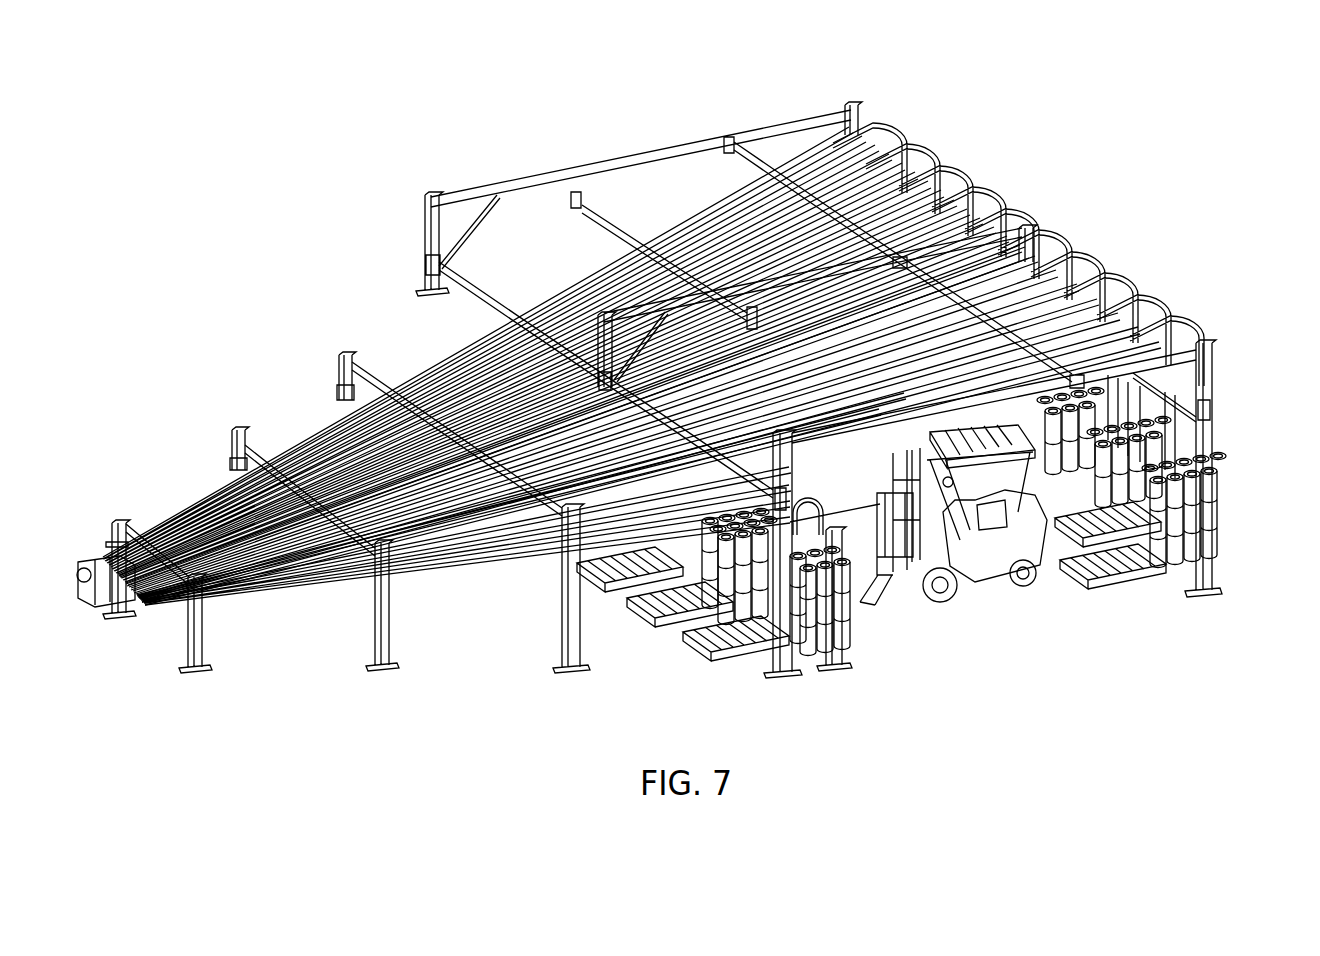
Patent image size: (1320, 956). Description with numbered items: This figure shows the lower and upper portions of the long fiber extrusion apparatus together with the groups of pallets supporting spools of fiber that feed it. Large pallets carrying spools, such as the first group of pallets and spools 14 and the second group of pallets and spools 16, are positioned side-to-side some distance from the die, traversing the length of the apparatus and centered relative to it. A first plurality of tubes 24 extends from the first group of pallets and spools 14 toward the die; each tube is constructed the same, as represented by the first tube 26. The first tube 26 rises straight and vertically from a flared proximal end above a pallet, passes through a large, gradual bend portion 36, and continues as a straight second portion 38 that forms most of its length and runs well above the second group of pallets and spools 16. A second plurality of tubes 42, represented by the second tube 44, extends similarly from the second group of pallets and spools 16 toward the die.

The first group of pallets and spools 14 is at (1238, 528).
The second group of pallets and spools 16 is at (878, 643).
The first plurality of tubes 24 is at (700, 205).
The first tube 26 is at (1170, 342).
The bend portion 36 is at (1188, 345).
The second portion 38 is at (1158, 340).
The second plurality of tubes 42 is at (465, 558).
The second tube 44 is at (823, 498).